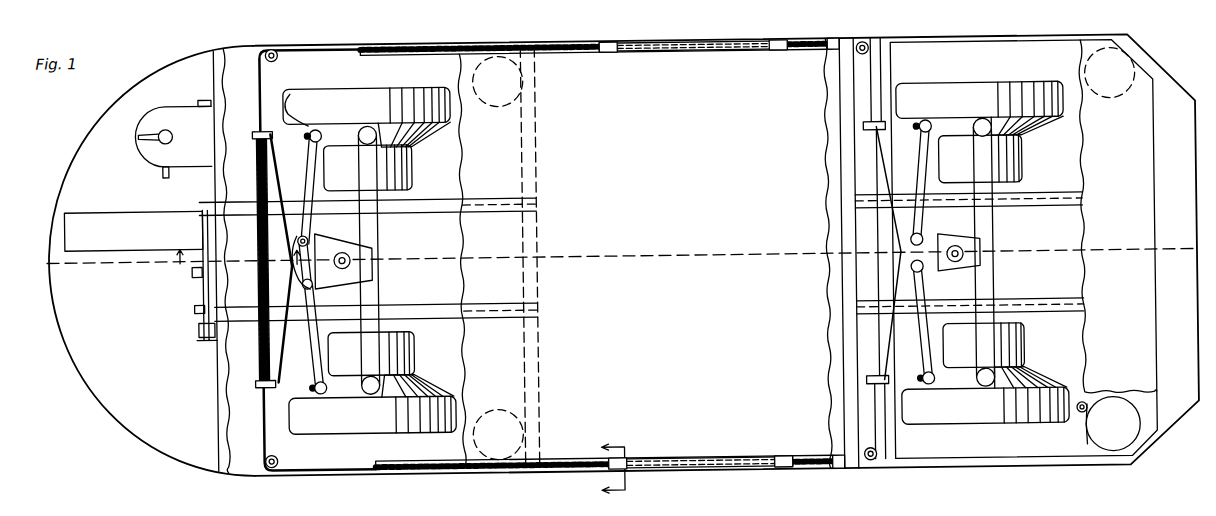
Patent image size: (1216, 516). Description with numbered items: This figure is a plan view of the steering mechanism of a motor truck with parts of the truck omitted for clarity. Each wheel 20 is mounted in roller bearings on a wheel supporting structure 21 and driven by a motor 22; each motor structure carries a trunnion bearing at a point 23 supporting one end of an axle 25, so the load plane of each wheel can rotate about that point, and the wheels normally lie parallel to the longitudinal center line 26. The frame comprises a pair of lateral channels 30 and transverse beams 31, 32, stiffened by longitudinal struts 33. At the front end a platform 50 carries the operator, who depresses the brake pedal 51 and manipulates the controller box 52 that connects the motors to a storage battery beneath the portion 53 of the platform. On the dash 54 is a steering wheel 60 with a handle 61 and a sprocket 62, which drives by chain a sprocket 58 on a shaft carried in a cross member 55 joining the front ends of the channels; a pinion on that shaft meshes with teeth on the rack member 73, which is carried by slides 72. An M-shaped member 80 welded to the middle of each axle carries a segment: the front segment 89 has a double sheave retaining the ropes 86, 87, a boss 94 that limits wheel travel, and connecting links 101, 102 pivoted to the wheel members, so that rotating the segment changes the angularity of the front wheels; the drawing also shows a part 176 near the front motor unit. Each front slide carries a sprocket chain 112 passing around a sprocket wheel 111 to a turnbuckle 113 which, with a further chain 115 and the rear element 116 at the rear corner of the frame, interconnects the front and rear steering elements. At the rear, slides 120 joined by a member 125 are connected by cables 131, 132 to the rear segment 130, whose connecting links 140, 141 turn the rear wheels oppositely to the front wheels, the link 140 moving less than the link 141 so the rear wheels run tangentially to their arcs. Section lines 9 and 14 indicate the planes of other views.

The section line 9 is at (234, 266).
The section line 14 is at (612, 471).
The wheel 20 is at (320, 82).
The wheel supporting structure 21 is at (420, 135).
The motor 22 is at (400, 160).
The trunnion bearing point 23 is at (368, 122).
The axle 25 is at (372, 262).
The longitudinal center line 26 is at (90, 262).
The channel 30 is at (455, 44).
The transverse beam 31 is at (540, 370).
The transverse beam 32 is at (856, 395).
The longitudinal strut 33 is at (442, 199).
The platform 50 is at (85, 352).
The brake pedal 51 is at (122, 212).
The controller box 52 is at (208, 99).
The platform portion 53 is at (612, 72).
The dash 54 is at (218, 340).
The cross member 55 is at (1090, 466).
The sprocket 58 is at (200, 203).
The steering wheel 60 is at (192, 282).
The handle 61 is at (192, 305).
The sprocket 62 is at (200, 330).
The slide 72 is at (256, 130).
The rack member 73 is at (258, 338).
The M-shaped member 80 is at (372, 246).
The rope 86 is at (287, 330).
The rope 87 is at (284, 186).
The front segment 89 is at (312, 246).
The boss 94 is at (310, 236).
The connecting link 101 is at (310, 372).
The connecting link 102 is at (310, 138).
The sprocket wheel 111 is at (283, 38).
The sprocket chain 112 is at (335, 40).
The turnbuckle 113 is at (718, 46).
The chain 115 is at (832, 44).
The roller 116 is at (864, 45).
The rear slide 120 is at (888, 132).
The member 125 is at (878, 276).
The rear segment 130 is at (925, 243).
The rope 131 is at (922, 335).
The rope 132 is at (925, 140).
The connecting link 140 is at (925, 278).
The connecting link 141 is at (922, 165).
The cover 176 is at (318, 90).